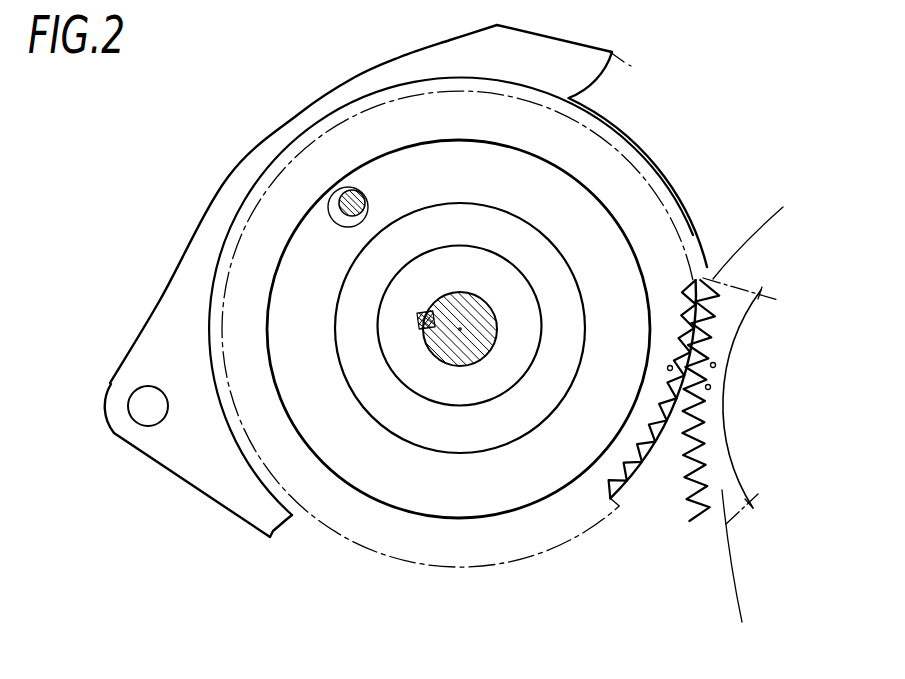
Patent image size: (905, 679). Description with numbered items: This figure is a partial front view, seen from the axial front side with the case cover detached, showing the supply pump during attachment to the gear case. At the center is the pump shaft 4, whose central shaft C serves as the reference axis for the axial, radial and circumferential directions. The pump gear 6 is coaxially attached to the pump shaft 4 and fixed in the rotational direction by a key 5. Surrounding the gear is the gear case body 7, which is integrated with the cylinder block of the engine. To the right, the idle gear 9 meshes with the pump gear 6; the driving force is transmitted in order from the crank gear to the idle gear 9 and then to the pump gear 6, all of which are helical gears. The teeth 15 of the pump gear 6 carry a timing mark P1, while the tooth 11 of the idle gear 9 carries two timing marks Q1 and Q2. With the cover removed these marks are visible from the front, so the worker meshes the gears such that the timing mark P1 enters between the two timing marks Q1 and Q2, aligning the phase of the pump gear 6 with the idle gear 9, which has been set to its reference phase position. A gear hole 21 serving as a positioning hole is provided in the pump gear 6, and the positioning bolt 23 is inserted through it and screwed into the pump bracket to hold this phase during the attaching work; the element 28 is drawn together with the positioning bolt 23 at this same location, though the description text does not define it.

The pump shaft 4 is at (446, 358).
The key 5 is at (419, 319).
The pump gear 6 is at (512, 490).
The gear case body 7 is at (187, 283).
The idle gear 9 is at (697, 513).
The tooth of the idle gear 11 is at (702, 475).
The teeth of the pump gear 15 is at (647, 445).
The gear hole 21 is at (393, 246).
The positioning bolt 23 is at (408, 196).
The pin 28 is at (363, 193).
The central shaft C is at (460, 329).
The timing mark P1 is at (667, 367).
The timing mark Q1 is at (715, 364).
The timing mark Q2 is at (710, 388).